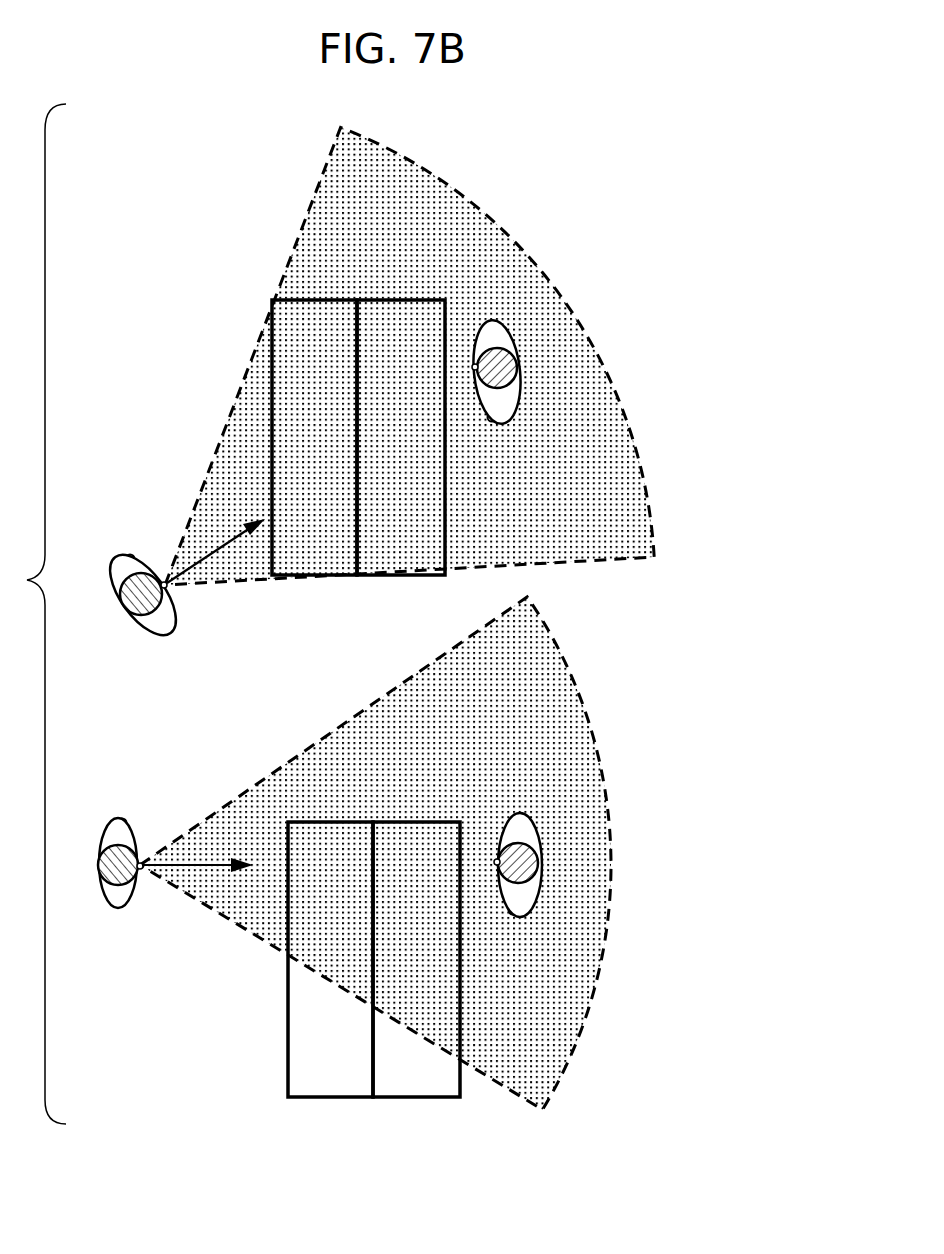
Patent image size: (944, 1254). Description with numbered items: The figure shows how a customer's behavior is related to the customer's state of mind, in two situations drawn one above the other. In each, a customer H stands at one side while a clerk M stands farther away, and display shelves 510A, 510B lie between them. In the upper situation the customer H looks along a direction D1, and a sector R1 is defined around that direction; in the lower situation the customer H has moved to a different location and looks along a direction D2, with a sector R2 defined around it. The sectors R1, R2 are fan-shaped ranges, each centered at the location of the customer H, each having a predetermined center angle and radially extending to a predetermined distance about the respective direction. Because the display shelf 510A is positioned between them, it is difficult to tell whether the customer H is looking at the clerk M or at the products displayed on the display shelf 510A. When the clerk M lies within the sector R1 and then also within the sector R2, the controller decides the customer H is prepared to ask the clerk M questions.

The display shelf 510A is at (349, 451).
The second display region 510B is at (436, 451).
The customer H is at (133, 552).
The clerk M is at (520, 366).
The direction D1 is at (216, 546).
The direction D2 is at (197, 853).
The sector R1 is at (558, 296).
The sector R2 is at (591, 735).